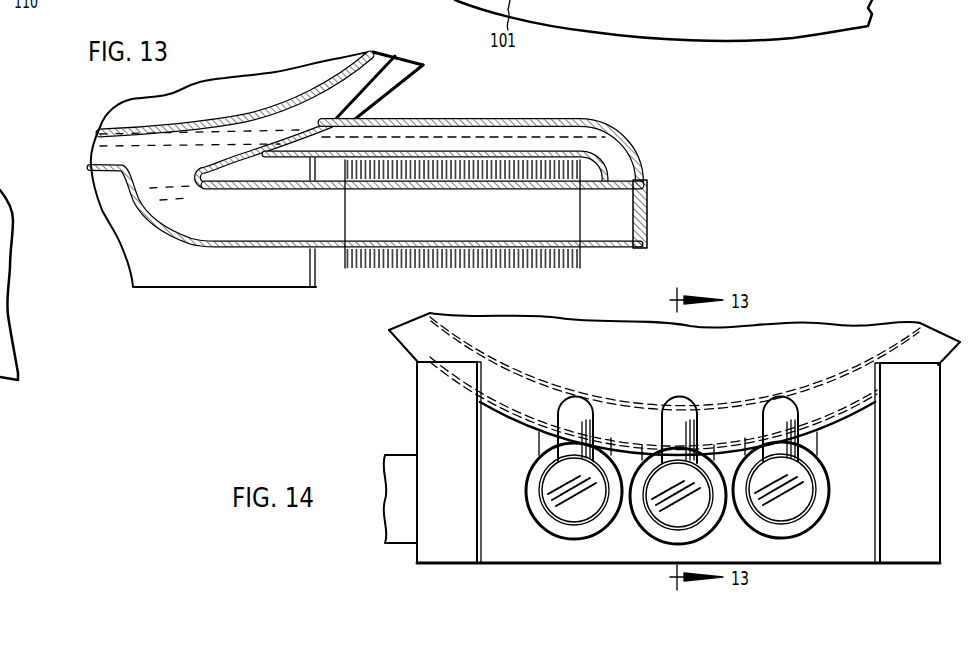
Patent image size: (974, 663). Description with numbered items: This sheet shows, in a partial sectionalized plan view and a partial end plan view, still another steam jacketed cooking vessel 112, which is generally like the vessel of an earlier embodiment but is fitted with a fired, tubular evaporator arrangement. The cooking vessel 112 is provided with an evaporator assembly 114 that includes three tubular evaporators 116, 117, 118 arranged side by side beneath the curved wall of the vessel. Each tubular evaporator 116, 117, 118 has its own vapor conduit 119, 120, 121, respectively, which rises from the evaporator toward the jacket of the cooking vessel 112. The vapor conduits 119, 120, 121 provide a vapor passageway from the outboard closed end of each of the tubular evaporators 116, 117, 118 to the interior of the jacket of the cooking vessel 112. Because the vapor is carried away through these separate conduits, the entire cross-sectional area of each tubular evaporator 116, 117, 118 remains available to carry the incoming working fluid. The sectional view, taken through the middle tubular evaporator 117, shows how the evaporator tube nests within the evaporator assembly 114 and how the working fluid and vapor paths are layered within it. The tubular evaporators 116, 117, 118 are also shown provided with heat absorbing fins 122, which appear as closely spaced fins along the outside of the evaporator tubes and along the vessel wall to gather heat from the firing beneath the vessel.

In FIG. 13, the jacketed cooking vessel 112 is at (265, 73).
In FIG. 14, the jacketed cooking vessel 112 is at (814, 310).
In FIG. 13, the evaporator assembly 114 is at (243, 251).
In FIG. 14, the evaporator assembly 114 is at (845, 492).
In FIG. 14, the tubular evaporator 116 is at (541, 513).
In FIG. 13, the tubular evaporator 117 is at (337, 255).
In FIG. 14, the tubular evaporator 117 is at (653, 514).
In FIG. 14, the tubular evaporator 118 is at (757, 513).
In FIG. 14, the vapor conduit 119 is at (559, 416).
In FIG. 14, the vapor conduit 120 is at (677, 405).
In FIG. 14, the vapor conduit 121 is at (773, 400).
In FIG. 13, the heat absorbing fins 122 is at (463, 256).
In FIG. 14, the heat absorbing fins 122 is at (677, 428).